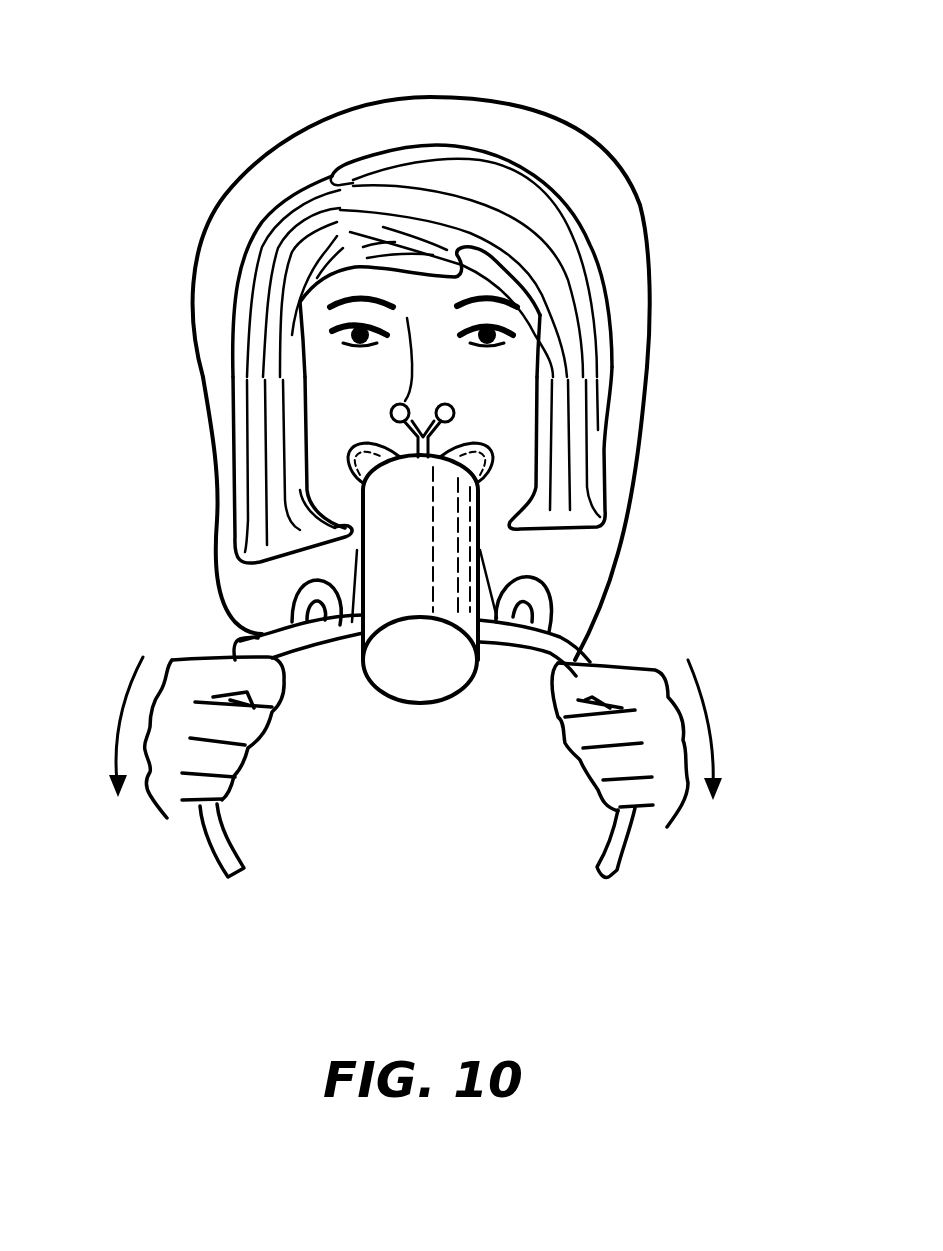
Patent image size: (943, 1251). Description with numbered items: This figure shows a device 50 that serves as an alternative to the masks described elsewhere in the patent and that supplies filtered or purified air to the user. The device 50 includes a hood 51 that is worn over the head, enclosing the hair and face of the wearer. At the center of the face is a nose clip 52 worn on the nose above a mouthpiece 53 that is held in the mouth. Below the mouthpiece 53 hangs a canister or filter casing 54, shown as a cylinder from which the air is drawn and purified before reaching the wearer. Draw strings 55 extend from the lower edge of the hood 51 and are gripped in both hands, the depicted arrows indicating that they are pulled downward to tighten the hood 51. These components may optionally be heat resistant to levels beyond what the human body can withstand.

The device 50 is at (186, 156).
The hood 51 is at (637, 213).
The nose clip 52 is at (456, 408).
The mouthpiece 53 is at (497, 457).
The canister or filter casing 54 is at (470, 560).
The draw strings 55 is at (658, 850).